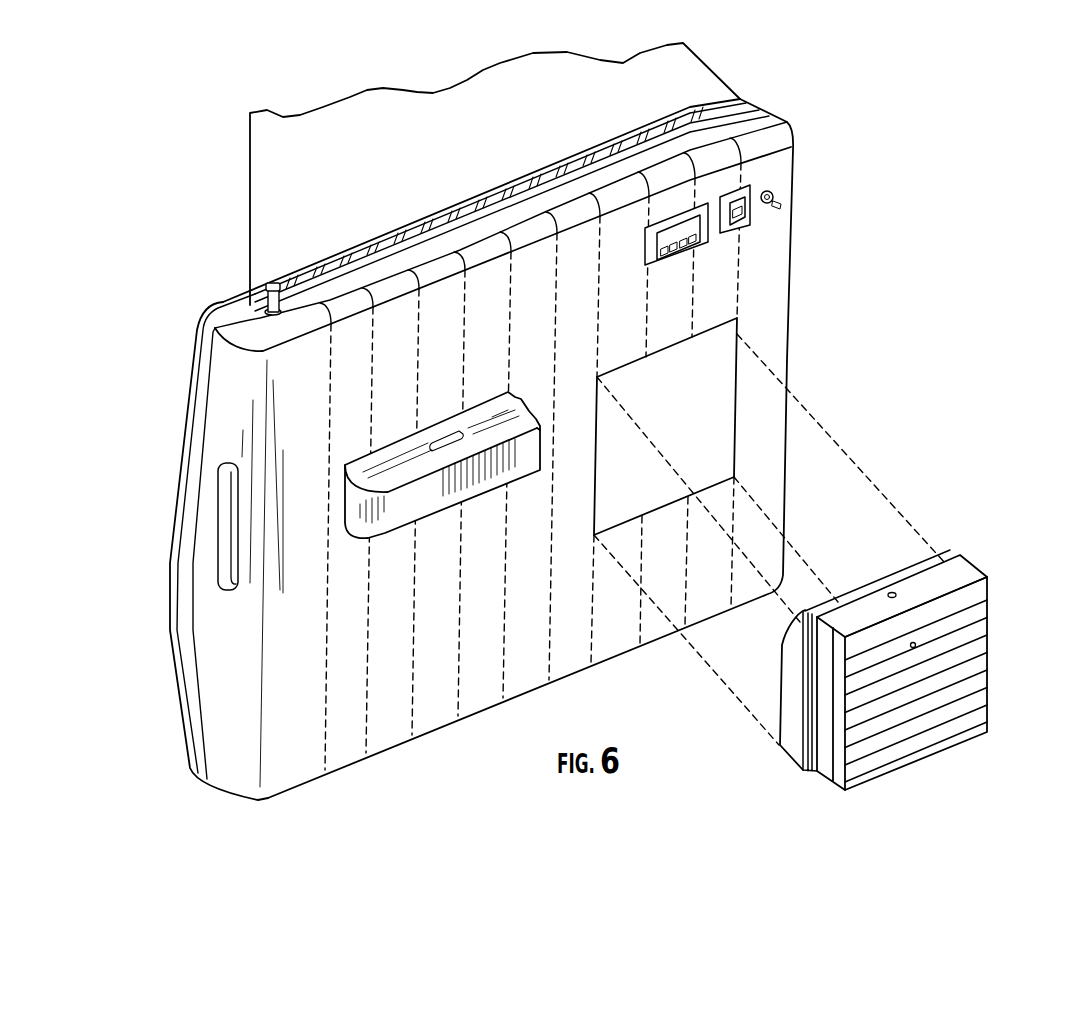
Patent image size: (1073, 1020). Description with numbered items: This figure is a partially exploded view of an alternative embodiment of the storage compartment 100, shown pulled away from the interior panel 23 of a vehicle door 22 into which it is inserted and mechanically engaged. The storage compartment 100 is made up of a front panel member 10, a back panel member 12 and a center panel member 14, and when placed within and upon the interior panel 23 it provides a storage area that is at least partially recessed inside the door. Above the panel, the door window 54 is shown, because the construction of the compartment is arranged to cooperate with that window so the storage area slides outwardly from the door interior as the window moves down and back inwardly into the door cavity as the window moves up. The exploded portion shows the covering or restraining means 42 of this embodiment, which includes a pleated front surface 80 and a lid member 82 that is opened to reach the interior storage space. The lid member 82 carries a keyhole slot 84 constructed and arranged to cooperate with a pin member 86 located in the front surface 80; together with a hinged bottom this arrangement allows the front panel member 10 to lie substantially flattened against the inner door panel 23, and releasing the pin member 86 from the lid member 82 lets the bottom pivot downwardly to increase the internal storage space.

The front panel member 10 is at (838, 776).
The back panel member 12 is at (812, 771).
The center panel member 14 is at (793, 732).
The vehicle door 22 is at (762, 112).
The interior panel 23 is at (770, 277).
The covering or restraining means 42 is at (977, 618).
The door window 54 is at (273, 213).
The pleated front surface 80 is at (960, 703).
The lid member 82 is at (973, 577).
The keyhole slot 84 is at (893, 592).
The pin member 86 is at (916, 645).
The storage compartment 100 is at (888, 654).